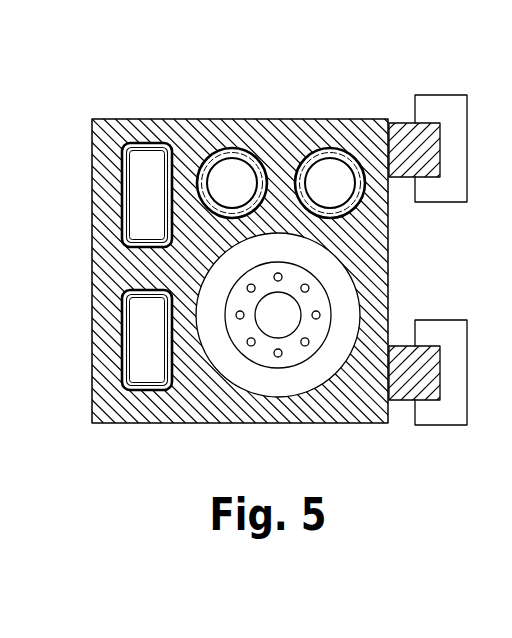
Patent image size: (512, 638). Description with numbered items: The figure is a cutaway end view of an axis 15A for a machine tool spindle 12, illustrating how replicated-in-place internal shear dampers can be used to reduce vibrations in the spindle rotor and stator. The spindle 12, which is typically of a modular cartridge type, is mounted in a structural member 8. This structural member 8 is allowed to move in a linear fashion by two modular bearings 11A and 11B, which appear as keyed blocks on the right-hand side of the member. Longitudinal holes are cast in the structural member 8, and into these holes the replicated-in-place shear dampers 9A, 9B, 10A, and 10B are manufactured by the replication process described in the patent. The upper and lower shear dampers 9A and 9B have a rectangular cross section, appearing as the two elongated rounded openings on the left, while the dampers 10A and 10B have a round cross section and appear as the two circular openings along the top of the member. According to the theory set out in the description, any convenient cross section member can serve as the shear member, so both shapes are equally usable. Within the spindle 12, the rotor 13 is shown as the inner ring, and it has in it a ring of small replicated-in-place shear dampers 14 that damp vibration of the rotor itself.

The structural member 8 is at (92, 140).
The upper shear damper 9A is at (121, 223).
The lower shear damper 9B is at (121, 340).
The shear damper 10A is at (257, 157).
The shear damper 10B is at (336, 155).
The modular bearing 11A is at (438, 203).
The modular bearing 11B is at (443, 318).
The machine tool spindle 12 is at (307, 392).
The rotor 13 is at (282, 368).
The replicated-in-place shear dampers 14 is at (248, 343).
The axis 15A is at (256, 272).